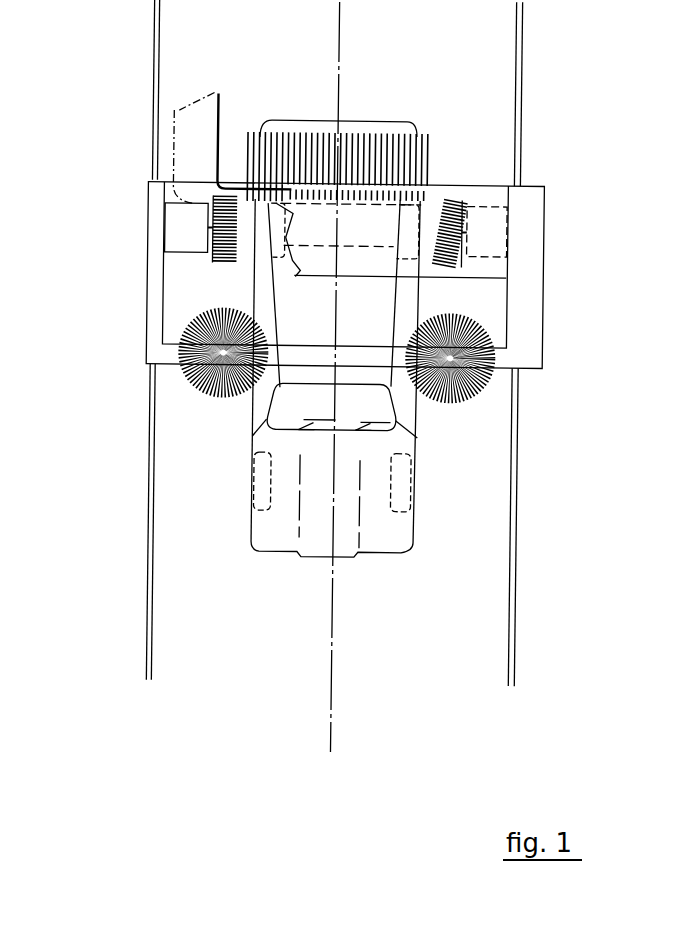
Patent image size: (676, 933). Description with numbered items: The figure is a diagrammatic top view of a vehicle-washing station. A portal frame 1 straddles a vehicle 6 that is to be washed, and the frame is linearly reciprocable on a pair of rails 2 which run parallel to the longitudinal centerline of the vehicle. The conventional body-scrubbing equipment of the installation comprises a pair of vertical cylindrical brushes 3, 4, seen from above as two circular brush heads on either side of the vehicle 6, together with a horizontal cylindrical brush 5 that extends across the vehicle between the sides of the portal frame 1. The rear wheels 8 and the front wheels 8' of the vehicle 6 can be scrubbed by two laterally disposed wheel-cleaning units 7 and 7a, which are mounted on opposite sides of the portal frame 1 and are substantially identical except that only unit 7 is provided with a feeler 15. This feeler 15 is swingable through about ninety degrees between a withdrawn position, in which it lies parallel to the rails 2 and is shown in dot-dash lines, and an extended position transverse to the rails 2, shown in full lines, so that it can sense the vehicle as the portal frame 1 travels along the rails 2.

The portal frame 1 is at (157, 240).
The rails 2 is at (151, 33).
The vertical cylindrical brush 3 is at (200, 384).
The vertical cylindrical brush 4 is at (464, 392).
The horizontal cylindrical brush 5 is at (391, 168).
The vehicle 6 is at (285, 524).
The wheel-cleaning unit 7 is at (191, 182).
The wheel-cleaning unit 7a is at (473, 196).
The rear wheels 8 is at (154, 314).
The front wheels 8' is at (148, 498).
The feeler 15 is at (233, 136).